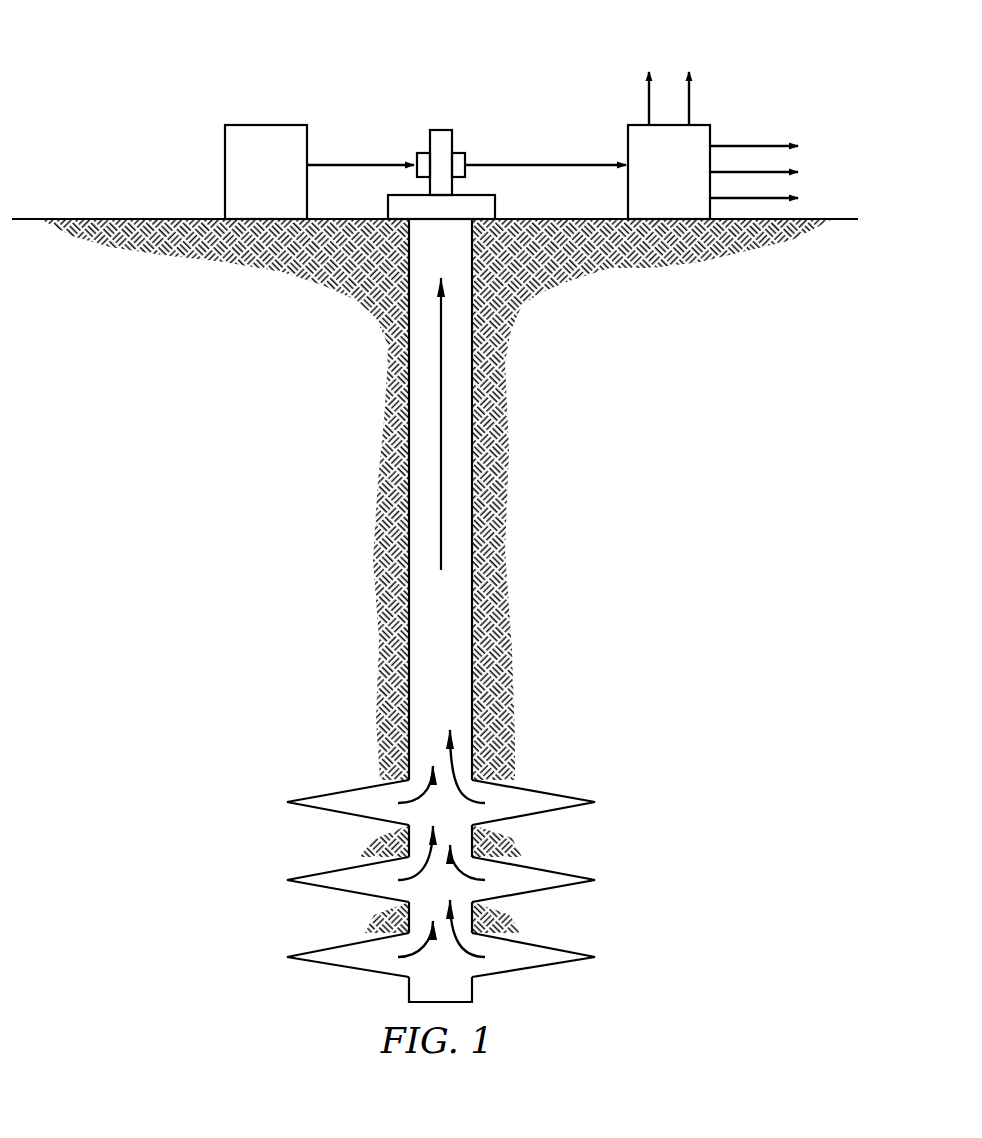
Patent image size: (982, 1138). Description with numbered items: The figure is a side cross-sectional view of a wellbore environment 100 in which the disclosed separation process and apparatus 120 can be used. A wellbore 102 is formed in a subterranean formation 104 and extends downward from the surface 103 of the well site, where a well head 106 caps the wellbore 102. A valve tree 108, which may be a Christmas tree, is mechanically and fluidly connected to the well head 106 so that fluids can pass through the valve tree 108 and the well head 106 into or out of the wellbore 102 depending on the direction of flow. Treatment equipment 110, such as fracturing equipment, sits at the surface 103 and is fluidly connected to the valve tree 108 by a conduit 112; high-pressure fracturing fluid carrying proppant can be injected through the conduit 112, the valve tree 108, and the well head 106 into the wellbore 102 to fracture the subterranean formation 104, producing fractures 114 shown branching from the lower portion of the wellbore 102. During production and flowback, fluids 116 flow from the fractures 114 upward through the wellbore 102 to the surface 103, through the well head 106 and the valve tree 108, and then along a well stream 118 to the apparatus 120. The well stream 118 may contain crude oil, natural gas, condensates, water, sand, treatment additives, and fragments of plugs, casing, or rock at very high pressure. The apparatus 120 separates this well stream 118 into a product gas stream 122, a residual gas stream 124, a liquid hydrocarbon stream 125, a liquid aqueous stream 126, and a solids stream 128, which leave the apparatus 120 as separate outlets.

The wellbore environment 100 is at (250, 33).
The wellbore 102 is at (409, 391).
The surface 103 is at (140, 218).
The subterranean formation 104 is at (436, 576).
The well head 106 is at (495, 197).
The valve tree 108 is at (441, 130).
The treatment equipment 110 is at (266, 172).
The conduit 112 is at (354, 163).
The fractures 114 is at (558, 801).
The fluids 116 is at (443, 390).
The well stream 118 is at (536, 163).
The apparatus 120 is at (669, 172).
The product gas stream 122 is at (649, 93).
The residual gas stream 124 is at (689, 93).
The liquid hydrocarbon stream 125 is at (766, 145).
The liquid aqueous stream 126 is at (766, 171).
The solids stream 128 is at (766, 197).